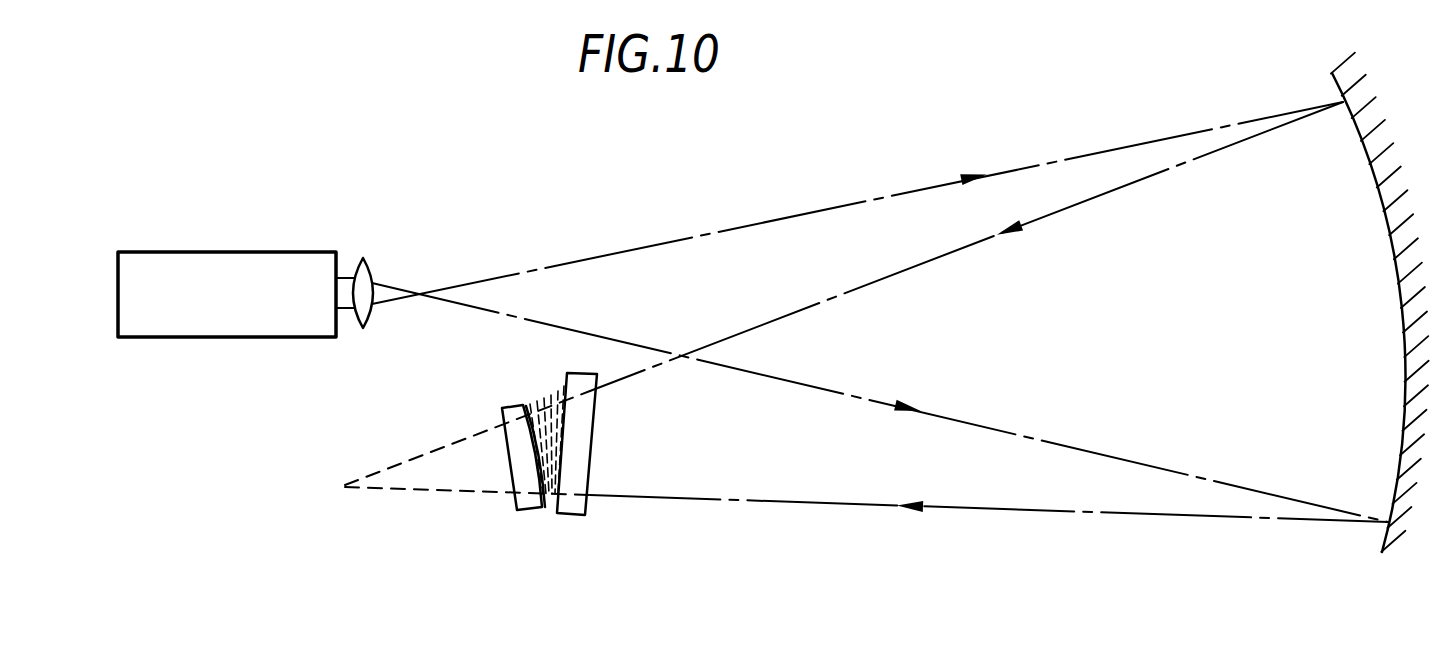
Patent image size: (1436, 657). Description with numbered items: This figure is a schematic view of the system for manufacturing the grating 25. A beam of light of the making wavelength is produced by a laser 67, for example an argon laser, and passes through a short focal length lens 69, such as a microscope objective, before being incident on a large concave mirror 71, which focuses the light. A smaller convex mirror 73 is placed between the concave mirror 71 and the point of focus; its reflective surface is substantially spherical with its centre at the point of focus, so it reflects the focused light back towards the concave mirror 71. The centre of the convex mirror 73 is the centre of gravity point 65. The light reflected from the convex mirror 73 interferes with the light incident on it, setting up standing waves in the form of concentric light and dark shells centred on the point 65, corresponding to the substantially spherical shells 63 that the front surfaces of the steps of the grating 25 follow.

The laser 67 is at (216, 277).
The short focal length lens 69 is at (367, 273).
The concave mirror 71 is at (1381, 203).
The convex mirror 73 is at (523, 505).
The grating 25 is at (597, 443).
The substantially spherical shells 63 is at (538, 418).
The centre of gravity point 65 is at (352, 485).